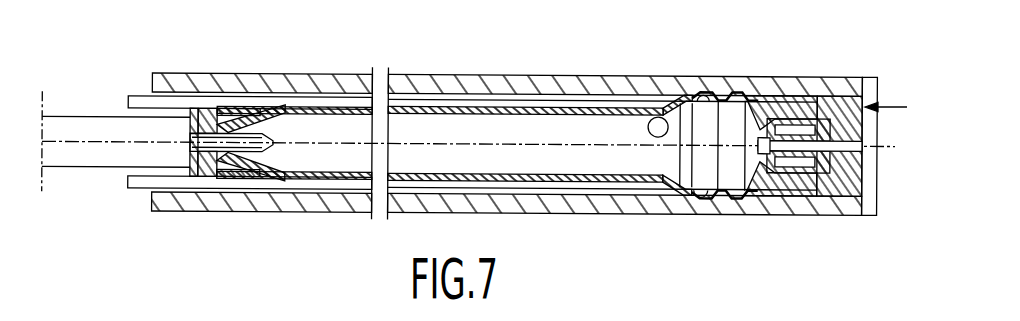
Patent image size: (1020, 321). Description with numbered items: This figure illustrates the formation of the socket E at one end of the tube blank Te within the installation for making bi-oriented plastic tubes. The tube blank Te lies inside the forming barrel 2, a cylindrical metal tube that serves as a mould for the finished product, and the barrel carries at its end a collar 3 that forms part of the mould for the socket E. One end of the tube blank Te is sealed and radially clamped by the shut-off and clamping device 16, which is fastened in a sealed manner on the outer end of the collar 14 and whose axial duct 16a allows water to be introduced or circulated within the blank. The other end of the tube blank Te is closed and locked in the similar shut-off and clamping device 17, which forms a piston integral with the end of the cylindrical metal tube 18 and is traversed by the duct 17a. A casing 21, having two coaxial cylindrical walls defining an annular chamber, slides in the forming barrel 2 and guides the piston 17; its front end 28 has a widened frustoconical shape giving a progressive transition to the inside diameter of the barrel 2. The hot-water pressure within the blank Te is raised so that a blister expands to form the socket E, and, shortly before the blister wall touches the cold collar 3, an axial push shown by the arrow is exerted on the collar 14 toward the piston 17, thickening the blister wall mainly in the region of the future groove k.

The forming barrel 2 is at (327, 200).
The collar 3 is at (748, 80).
The collar 14 is at (802, 212).
The shut-off and clamping device 16 is at (809, 100).
The duct 16a is at (864, 148).
The shut-off and clamping device 17 is at (208, 106).
The duct 17a is at (284, 102).
The cylindrical metal tube 18 is at (83, 153).
The casing 21 is at (138, 188).
The front end of the casing 28 is at (645, 112).
The groove k is at (697, 104).
The socket E is at (693, 185).
The tube blank Te is at (567, 183).